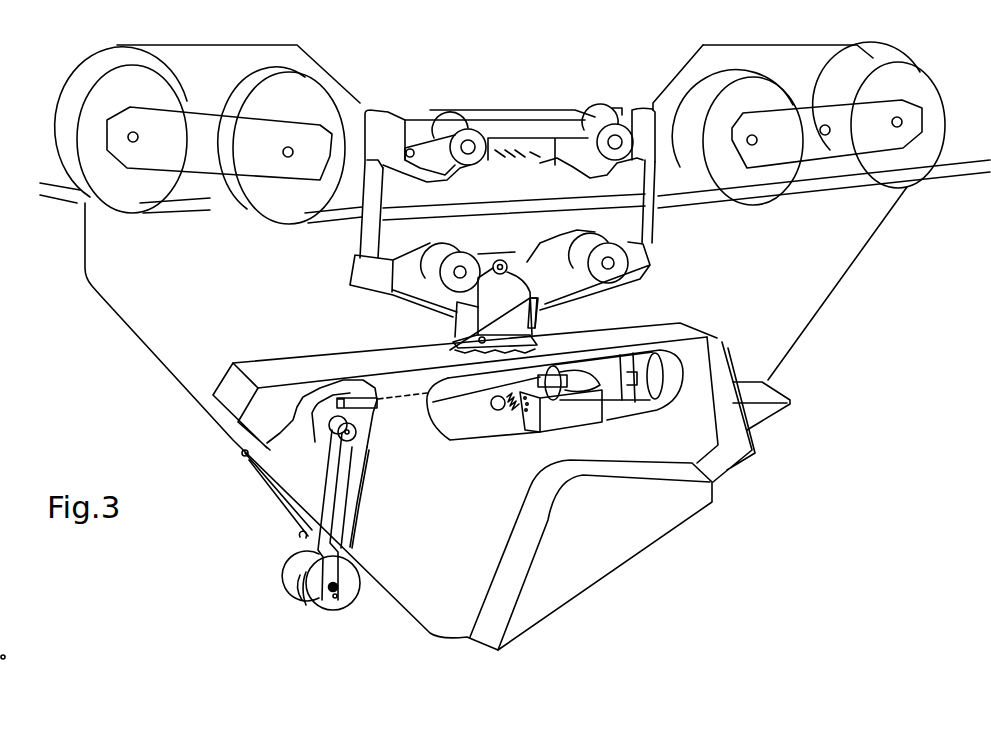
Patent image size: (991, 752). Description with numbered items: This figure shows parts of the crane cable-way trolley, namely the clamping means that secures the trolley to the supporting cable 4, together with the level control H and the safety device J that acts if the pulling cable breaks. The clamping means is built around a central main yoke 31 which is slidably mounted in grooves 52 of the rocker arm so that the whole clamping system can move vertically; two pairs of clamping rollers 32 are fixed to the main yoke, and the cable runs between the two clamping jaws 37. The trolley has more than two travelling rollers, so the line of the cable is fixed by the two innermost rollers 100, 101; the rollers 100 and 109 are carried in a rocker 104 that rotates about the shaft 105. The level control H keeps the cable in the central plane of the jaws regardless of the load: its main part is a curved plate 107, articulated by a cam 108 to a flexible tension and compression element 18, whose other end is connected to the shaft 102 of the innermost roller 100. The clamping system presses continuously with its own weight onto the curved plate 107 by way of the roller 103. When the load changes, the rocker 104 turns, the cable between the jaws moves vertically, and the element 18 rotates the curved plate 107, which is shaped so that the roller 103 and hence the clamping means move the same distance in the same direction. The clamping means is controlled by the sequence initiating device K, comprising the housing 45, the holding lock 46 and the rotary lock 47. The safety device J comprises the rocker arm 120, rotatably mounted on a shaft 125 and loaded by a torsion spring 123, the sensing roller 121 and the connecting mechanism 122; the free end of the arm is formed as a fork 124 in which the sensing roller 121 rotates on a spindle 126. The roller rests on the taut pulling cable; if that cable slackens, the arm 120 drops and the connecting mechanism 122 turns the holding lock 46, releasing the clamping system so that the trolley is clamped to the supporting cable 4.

The supporting cable 4 is at (75, 192).
The innermost roller 101 is at (303, 95).
The innermost roller 100 is at (737, 92).
The roller 109 is at (913, 77).
The rocker 104 is at (795, 123).
The shaft 102 is at (752, 146).
The shaft 105 is at (825, 137).
The main yoke 31 is at (502, 113).
The clamping rollers 32 is at (627, 145).
The grooves 52 is at (380, 115).
The clamping jaws 37 is at (393, 237).
The roller 103 is at (505, 261).
The level control H is at (490, 312).
The curved plate 107 is at (510, 313).
The cam 108 is at (460, 342).
The tension and compression element 18 is at (530, 336).
The housing 45 is at (562, 420).
The connecting mechanism 122 is at (482, 390).
The rotary lock 47 is at (502, 408).
The sequence initiating device K is at (583, 418).
The holding lock 46 is at (592, 387).
The torsion spring 123 is at (335, 424).
The shaft 125 is at (339, 446).
The rocker arm 120 is at (315, 540).
The sensing roller 121 is at (328, 607).
The safety device J is at (327, 587).
The fork 124 is at (338, 583).
The spindle 126 is at (335, 597).